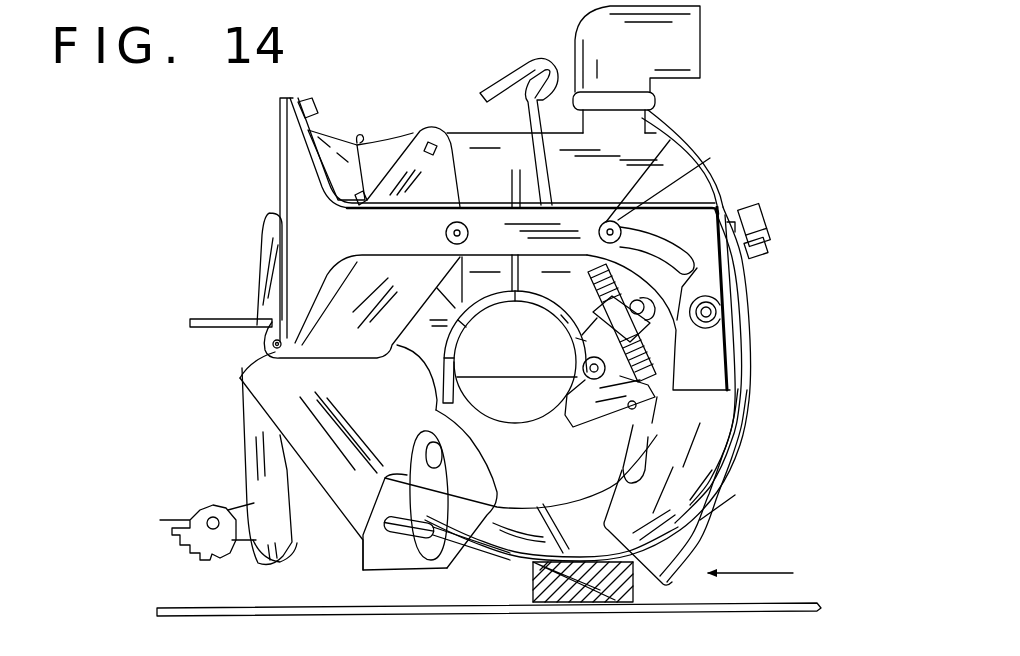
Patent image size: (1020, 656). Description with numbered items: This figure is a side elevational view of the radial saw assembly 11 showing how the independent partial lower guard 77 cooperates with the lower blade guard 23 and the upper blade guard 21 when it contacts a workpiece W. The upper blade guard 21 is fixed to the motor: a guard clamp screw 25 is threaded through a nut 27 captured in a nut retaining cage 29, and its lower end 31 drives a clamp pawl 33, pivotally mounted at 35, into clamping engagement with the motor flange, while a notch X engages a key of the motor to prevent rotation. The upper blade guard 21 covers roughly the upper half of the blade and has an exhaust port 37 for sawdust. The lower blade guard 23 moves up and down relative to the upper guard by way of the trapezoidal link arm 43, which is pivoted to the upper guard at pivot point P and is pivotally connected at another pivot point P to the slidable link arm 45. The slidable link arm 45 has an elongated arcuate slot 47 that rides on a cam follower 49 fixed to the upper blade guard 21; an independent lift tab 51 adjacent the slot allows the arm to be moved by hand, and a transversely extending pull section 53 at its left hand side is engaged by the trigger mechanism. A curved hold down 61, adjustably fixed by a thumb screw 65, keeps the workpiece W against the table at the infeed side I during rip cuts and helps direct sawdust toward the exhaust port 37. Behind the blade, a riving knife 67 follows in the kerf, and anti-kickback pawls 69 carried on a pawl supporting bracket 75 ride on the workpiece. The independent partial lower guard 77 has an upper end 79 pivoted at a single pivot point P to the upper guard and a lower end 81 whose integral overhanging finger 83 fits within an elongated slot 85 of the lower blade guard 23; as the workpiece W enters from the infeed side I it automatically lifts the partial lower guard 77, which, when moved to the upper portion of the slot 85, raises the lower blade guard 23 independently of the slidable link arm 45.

The radial saw assembly 11 is at (170, 245).
The upper blade guard 21 is at (623, 137).
The lower blade guard 23 is at (297, 397).
The guard clamp screw 25 is at (510, 80).
The nut 27 is at (700, 190).
The nut retaining cage 29 is at (728, 270).
The lower end 31 is at (655, 378).
The clamp pawl 33 is at (655, 410).
The pivot 35 is at (605, 396).
The exhaust port 37 is at (677, 42).
The link arm 43 is at (410, 157).
The slidable link arm 45 is at (468, 210).
The arcuate slot 47 is at (710, 158).
The cam follower 49 is at (667, 142).
The lift tab 51 is at (745, 208).
The pull section 53 is at (298, 175).
The hold down 61 is at (700, 503).
The thumb screw 65 is at (757, 218).
The riving knife 67 is at (280, 540).
The anti-kickback pawls 69 is at (185, 543).
The pawl supporting bracket 75 is at (257, 497).
The independent partial lower guard 77 is at (505, 547).
The upper end 79 is at (708, 360).
The lower end 81 is at (395, 492).
The overhanging finger 83 is at (418, 560).
The elongated slot 85 is at (437, 438).
The pivot point P is at (270, 348).
The notch X is at (455, 340).
The workpiece W is at (578, 600).
The infeed side I is at (758, 576).